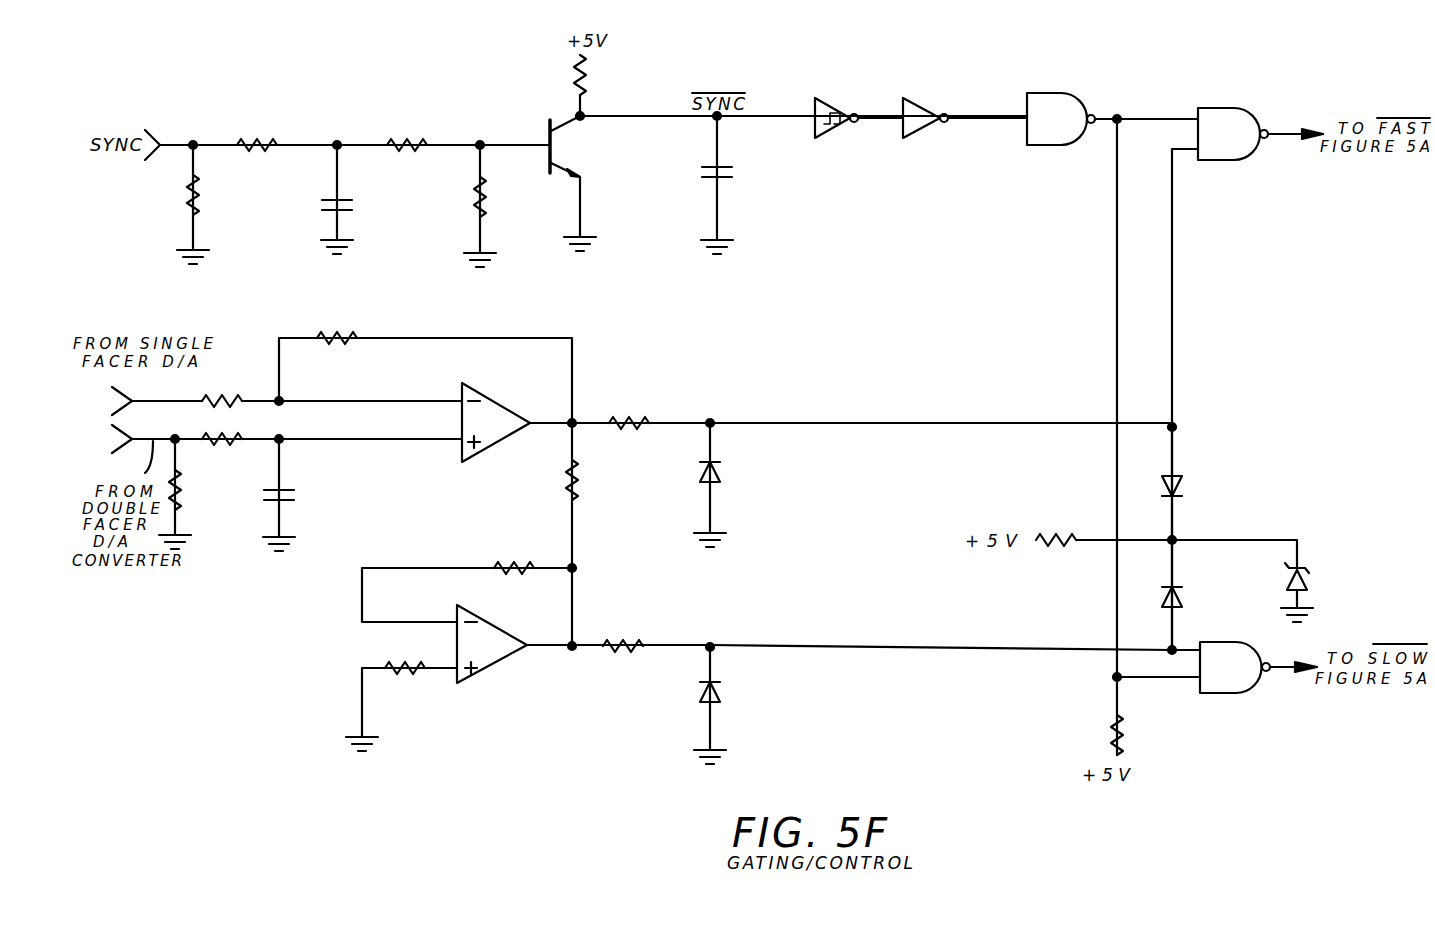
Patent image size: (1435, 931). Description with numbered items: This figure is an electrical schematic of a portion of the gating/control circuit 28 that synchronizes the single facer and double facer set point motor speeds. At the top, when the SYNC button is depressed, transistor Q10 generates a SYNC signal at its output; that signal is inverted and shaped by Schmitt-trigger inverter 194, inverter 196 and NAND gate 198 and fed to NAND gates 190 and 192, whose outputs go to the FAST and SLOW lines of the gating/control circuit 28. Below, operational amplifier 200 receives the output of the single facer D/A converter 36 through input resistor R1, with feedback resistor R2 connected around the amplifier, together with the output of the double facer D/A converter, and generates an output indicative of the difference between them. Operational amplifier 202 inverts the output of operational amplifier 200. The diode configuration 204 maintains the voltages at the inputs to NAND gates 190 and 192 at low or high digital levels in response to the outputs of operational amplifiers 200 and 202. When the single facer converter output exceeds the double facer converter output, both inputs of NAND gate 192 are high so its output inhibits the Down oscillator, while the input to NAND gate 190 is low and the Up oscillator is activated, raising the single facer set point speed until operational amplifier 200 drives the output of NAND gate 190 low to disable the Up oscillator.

The NAND gate 190 is at (1233, 122).
The NAND gate 192 is at (1230, 653).
The Schmitt-trigger inverter 194 is at (822, 98).
The inverter 196 is at (922, 104).
The NAND gate 198 is at (1057, 102).
The operational amplifier 200 is at (492, 407).
The operational amplifier 202 is at (497, 633).
The diode configuration 204 is at (748, 500).
The gating/control circuit 28 is at (900, 745).
The single facer D/A converter 36 is at (158, 401).
The transistor Q10 is at (580, 183).
The resistor R1 is at (222, 393).
The resistor R2 is at (425, 368).